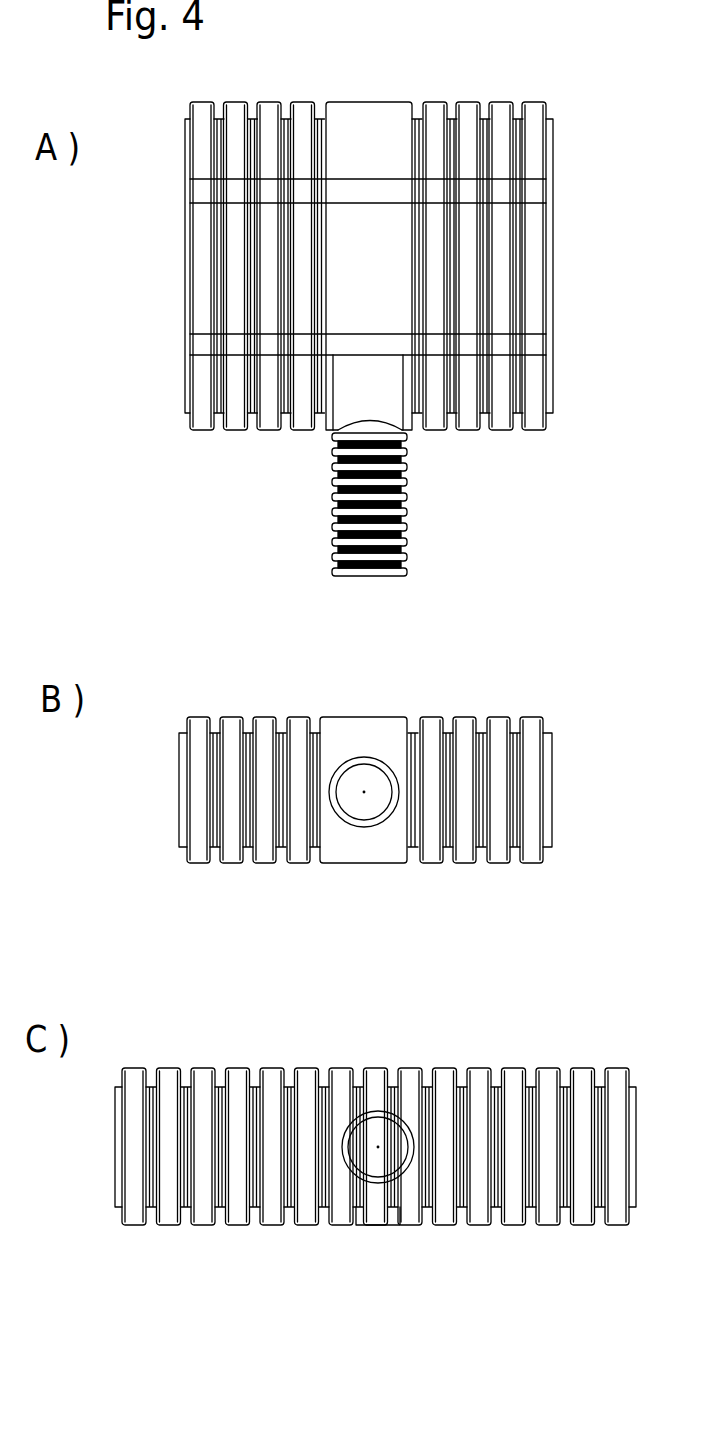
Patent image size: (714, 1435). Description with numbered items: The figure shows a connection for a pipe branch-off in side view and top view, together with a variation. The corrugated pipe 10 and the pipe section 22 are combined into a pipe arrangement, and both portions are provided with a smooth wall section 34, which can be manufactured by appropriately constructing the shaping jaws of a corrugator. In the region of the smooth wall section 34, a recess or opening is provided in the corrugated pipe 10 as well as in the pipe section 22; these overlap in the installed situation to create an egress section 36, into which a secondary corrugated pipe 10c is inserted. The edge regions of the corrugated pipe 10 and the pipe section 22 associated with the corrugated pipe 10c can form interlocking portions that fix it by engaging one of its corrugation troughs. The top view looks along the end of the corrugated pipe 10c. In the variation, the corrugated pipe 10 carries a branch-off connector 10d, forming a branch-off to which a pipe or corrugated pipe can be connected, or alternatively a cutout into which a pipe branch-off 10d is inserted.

In FIG. 4A, the corrugated pipe 10 is at (357, 313).
In FIG. 4B, the corrugated pipe 10 is at (350, 834).
In FIG. 4C, the corrugated pipe 10 is at (391, 1192).
In FIG. 4A, the pipe section 22 is at (207, 442).
In FIG. 4B, the pipe section 22 is at (192, 872).
In FIG. 4C, the pipe section 22 is at (622, 1240).
In FIG. 4A, the smooth wall section 34 is at (372, 127).
In FIG. 4B, the smooth wall section 34 is at (372, 850).
In FIG. 4A, the egress section 36 is at (394, 402).
In FIG. 4A, the secondary corrugated pipe 10c is at (330, 516).
In FIG. 4B, the secondary corrugated pipe 10c is at (358, 760).
In FIG. 4C, the branch-off connector 10d is at (357, 1180).